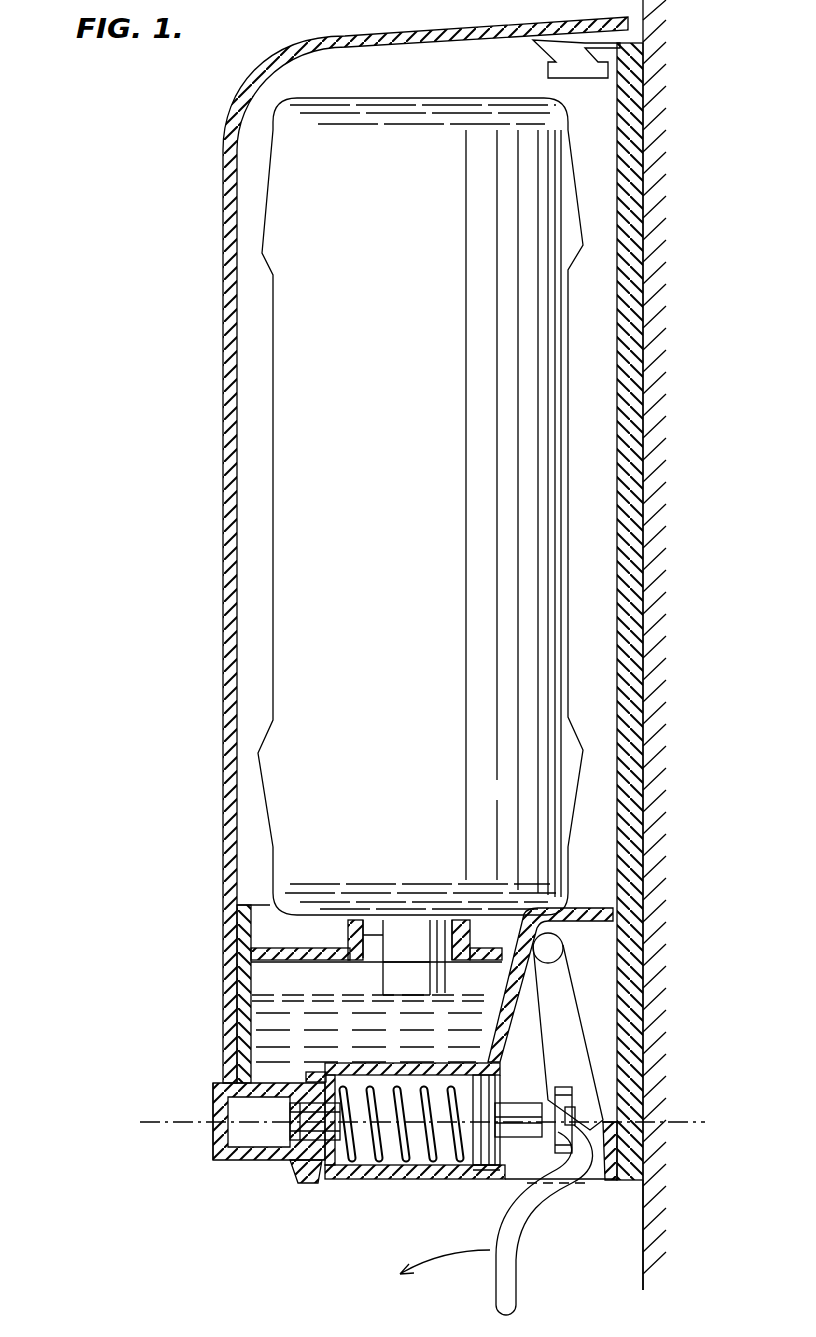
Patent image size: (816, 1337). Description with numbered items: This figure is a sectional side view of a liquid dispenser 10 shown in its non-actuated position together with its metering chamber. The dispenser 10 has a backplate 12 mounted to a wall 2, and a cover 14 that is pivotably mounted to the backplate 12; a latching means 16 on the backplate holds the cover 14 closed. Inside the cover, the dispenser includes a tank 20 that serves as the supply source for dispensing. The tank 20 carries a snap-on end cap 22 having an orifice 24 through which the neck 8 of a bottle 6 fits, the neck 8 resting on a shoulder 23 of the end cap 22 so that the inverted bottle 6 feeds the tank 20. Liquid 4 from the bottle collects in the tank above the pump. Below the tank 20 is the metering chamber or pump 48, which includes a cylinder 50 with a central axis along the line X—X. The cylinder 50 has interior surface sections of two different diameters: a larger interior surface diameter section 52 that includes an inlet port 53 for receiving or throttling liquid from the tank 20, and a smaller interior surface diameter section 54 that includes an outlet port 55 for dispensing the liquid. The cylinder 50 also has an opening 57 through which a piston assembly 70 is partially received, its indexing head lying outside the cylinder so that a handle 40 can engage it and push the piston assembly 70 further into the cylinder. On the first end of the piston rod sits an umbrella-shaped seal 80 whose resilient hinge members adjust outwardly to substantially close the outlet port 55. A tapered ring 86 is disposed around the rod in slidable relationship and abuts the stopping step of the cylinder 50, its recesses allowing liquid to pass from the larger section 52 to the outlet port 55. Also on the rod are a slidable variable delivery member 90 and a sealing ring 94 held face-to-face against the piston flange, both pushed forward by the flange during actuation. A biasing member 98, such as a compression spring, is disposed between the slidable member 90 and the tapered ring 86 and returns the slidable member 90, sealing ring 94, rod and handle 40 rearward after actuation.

The wall 2 is at (641, 1236).
The liquid 4 is at (292, 996).
The bottle 6 is at (271, 626).
The neck 8 is at (382, 975).
The liquid dispenser 10 is at (156, 382).
The backplate 12 is at (641, 814).
The cover 14 is at (224, 237).
The latching means 16 is at (598, 70).
The tank 20 is at (247, 1002).
The snap-on end cap 22 is at (270, 945).
The shoulder 23 is at (470, 900).
The orifice 24 is at (366, 900).
The handle 40 is at (517, 1266).
The metering chamber 48 is at (197, 1131).
The cylinder 50 is at (208, 1103).
The larger interior surface diameter section 52 is at (390, 1179).
The inlet port 53 is at (498, 1040).
The smaller interior surface diameter section 54 is at (250, 1143).
The outlet port 55 is at (300, 1182).
The opening 57 is at (512, 1103).
The piston assembly 70 is at (560, 1100).
The umbrella-shaped seal 80 is at (289, 1121).
The tapered ring 86 is at (316, 1080).
The slidable variable delivery member 90 is at (476, 1178).
The sealing ring 94 is at (496, 1152).
The biasing member 98 is at (432, 1179).